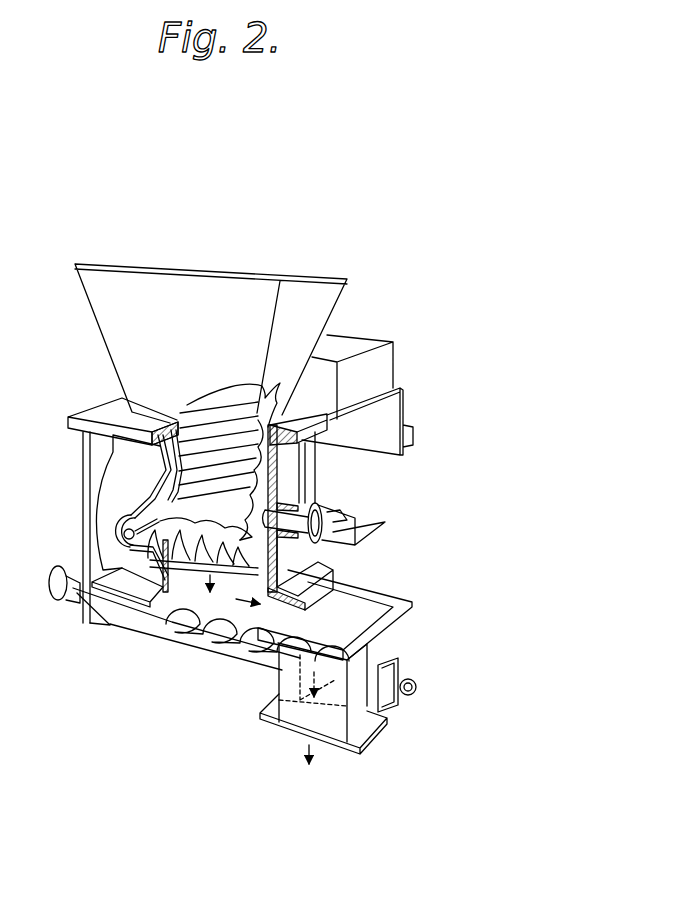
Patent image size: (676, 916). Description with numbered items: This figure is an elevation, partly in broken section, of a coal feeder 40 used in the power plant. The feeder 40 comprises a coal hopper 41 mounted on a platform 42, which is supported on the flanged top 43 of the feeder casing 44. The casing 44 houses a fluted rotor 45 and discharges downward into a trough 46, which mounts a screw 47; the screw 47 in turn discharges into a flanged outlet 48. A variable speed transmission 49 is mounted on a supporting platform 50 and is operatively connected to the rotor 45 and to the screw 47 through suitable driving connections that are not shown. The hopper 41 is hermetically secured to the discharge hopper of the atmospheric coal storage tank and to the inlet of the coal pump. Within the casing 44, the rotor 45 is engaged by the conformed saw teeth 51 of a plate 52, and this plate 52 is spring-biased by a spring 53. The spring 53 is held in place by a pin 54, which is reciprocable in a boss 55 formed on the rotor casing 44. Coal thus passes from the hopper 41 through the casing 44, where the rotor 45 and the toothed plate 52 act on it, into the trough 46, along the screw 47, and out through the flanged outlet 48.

The feeder 40 is at (66, 422).
The coal hopper 41 is at (130, 326).
The platform 42 is at (106, 410).
The flanged top 43 is at (318, 432).
The feeder casing 44 is at (128, 479).
The fluted rotor 45 is at (226, 490).
The trough 46 is at (156, 632).
The screw 47 is at (223, 640).
The flanged outlet 48 is at (310, 717).
The variable speed transmission 49 is at (372, 367).
The supporting platform 50 is at (387, 406).
The saw teeth 51 is at (208, 565).
The plate 52 is at (203, 543).
The spring 53 is at (155, 518).
The pin 54 is at (122, 536).
The boss 55 is at (130, 502).